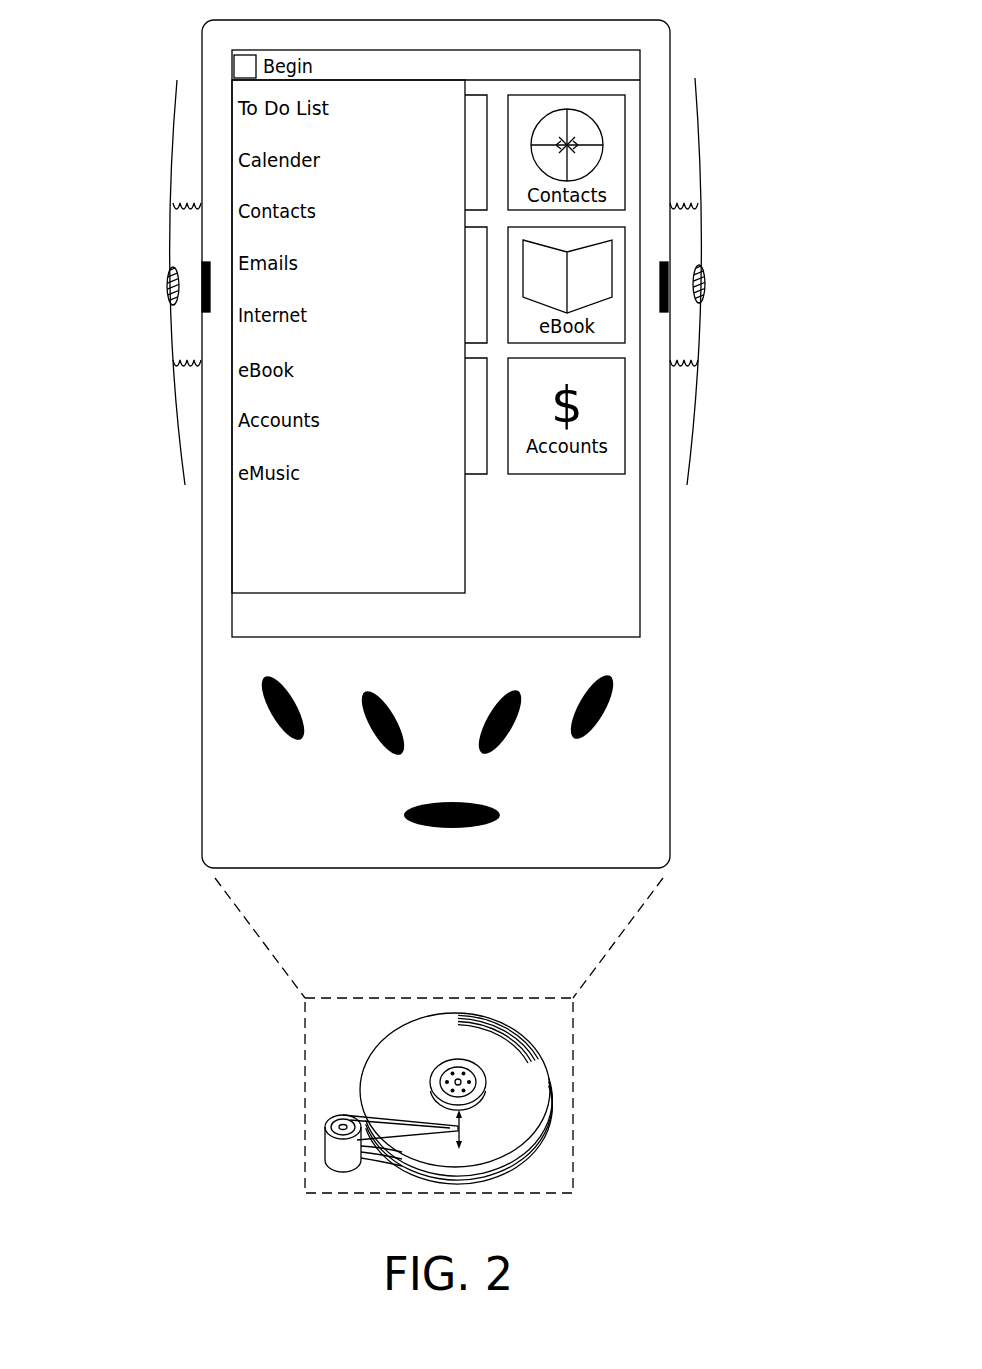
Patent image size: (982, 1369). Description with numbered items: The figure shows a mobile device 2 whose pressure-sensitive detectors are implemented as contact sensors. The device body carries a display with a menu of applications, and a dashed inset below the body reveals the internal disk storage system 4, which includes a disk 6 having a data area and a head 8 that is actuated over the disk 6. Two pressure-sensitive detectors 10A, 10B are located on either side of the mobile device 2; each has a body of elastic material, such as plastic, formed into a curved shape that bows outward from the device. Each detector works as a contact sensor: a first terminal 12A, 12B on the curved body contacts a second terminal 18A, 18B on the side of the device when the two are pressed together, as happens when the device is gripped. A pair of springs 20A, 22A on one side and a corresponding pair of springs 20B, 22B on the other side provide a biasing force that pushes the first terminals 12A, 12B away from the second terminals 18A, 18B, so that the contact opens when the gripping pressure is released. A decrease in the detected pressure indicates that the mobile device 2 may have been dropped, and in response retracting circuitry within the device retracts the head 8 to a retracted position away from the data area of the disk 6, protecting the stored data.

The mobile device 2 is at (748, 45).
The disk storage system 4 is at (573, 1088).
The disk 6 is at (425, 1027).
The head 8 is at (462, 1130).
The pressure-sensitive detector 10A is at (172, 430).
The pressure-sensitive detector 10B is at (702, 428).
The first terminal 12A is at (169, 292).
The first terminal 12B is at (703, 284).
The second terminal 18A is at (202, 266).
The second terminal 18B is at (668, 262).
The spring 20A is at (178, 363).
The spring 20B is at (700, 362).
The spring 22A is at (176, 207).
The spring 22B is at (697, 203).